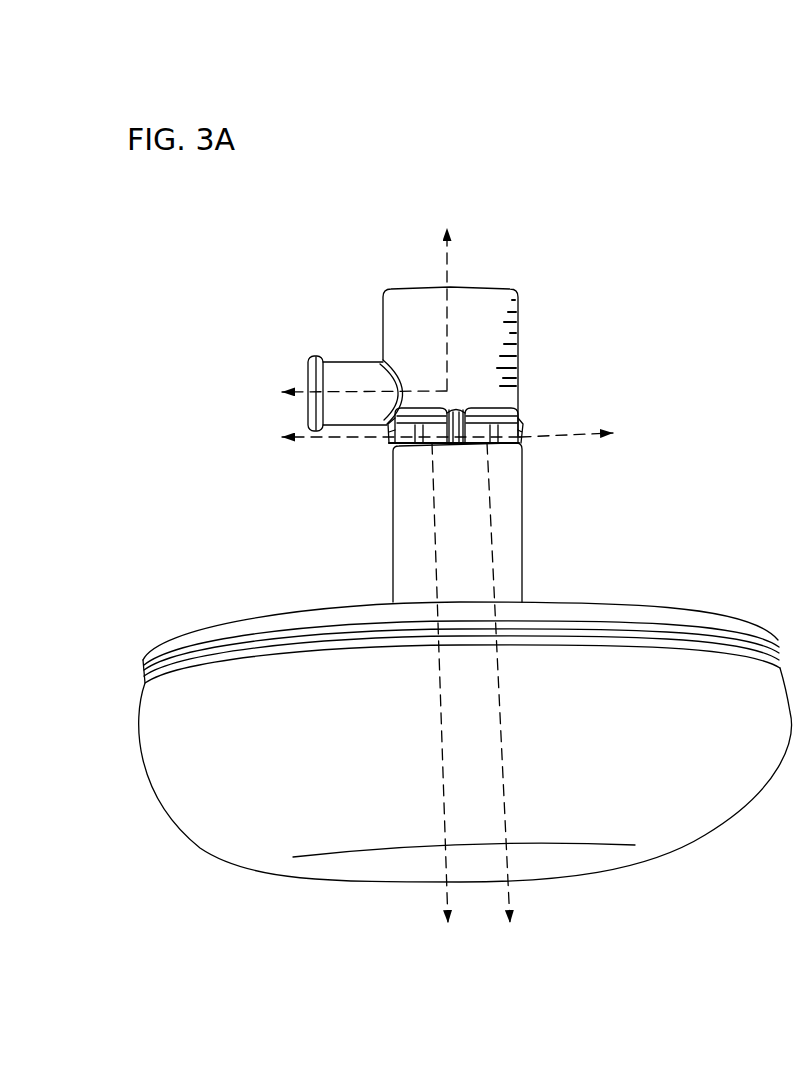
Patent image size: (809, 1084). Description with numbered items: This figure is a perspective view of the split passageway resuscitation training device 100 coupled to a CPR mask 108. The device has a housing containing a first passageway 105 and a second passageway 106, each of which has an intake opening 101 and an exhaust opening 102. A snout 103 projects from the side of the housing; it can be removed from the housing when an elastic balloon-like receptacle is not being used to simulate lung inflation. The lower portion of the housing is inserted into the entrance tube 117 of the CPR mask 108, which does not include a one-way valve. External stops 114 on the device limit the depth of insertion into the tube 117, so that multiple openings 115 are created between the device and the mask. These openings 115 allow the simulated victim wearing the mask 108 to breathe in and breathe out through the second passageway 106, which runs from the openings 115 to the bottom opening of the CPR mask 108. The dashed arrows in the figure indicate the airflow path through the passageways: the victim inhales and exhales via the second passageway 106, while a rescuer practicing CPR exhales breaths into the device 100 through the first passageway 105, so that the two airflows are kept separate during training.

The split passageway resuscitation training device 100 is at (308, 256).
The intake opening 101 is at (413, 273).
The exhaust opening 102 is at (280, 417).
The snout 103 is at (355, 370).
The first passageway 105 is at (448, 268).
The second passageway 106 is at (577, 430).
The CPR mask 108 is at (665, 680).
The external stops 114 is at (522, 418).
The openings 115 is at (375, 455).
The entrance tube 117 is at (510, 493).